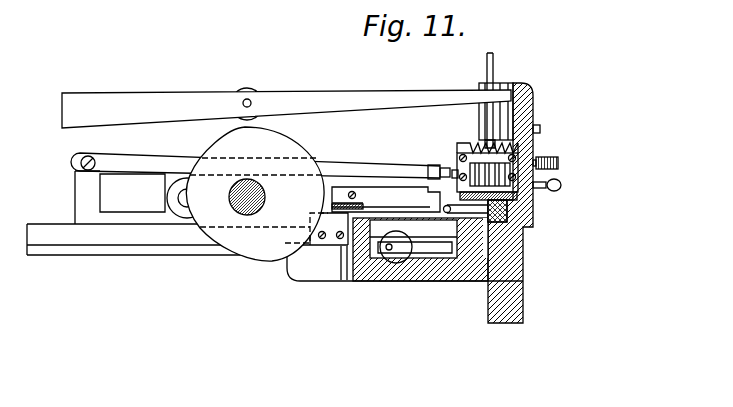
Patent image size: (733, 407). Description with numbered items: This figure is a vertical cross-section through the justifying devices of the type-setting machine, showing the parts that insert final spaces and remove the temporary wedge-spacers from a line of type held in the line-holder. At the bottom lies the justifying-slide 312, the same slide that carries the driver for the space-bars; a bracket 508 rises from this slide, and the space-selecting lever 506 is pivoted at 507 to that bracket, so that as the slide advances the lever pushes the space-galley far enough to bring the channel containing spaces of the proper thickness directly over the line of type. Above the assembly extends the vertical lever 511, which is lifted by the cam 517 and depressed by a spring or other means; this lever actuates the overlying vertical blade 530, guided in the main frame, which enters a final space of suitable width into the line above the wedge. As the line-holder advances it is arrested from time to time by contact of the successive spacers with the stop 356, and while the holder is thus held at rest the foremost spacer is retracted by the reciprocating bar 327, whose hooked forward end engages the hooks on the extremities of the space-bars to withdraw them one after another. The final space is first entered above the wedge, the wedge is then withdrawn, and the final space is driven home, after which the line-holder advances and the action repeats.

The justifying-slide 312 is at (162, 242).
The bracket 508 is at (80, 192).
The pivot 507 is at (91, 165).
The vertical lever 511 is at (335, 100).
The cam 517 is at (257, 194).
The space-selecting lever 506 is at (390, 158).
The reciprocating bar 327 is at (386, 196).
The stop 356 is at (534, 213).
The vertical blade 530 is at (494, 58).